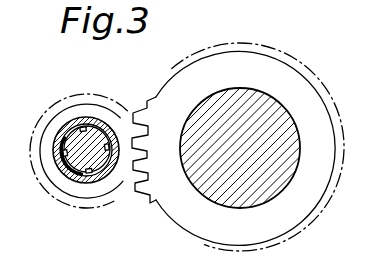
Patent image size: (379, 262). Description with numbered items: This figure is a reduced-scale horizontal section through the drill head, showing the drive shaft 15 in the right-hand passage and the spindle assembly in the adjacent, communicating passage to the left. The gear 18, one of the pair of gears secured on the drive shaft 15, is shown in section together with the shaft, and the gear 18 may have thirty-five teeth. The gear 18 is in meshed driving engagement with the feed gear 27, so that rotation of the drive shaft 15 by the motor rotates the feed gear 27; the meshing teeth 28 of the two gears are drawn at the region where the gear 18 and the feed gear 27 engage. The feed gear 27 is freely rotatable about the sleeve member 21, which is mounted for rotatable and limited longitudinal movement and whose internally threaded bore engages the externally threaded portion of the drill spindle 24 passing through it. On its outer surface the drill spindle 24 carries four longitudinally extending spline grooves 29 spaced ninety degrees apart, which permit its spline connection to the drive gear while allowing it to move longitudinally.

The drive shaft 15 is at (277, 113).
The gear 18 is at (306, 203).
The gear teeth 28 is at (150, 179).
The feed gear 27 is at (89, 192).
The sleeve member 21 is at (63, 121).
The drill spindle 24 is at (100, 122).
The spline grooves 29 is at (65, 152).